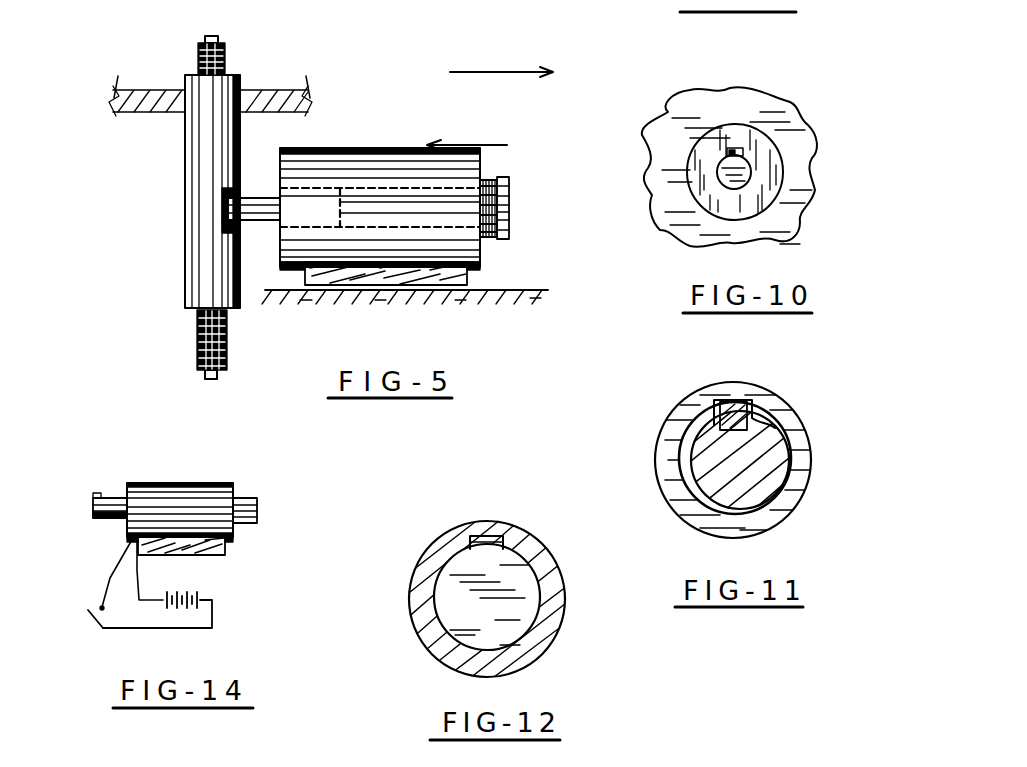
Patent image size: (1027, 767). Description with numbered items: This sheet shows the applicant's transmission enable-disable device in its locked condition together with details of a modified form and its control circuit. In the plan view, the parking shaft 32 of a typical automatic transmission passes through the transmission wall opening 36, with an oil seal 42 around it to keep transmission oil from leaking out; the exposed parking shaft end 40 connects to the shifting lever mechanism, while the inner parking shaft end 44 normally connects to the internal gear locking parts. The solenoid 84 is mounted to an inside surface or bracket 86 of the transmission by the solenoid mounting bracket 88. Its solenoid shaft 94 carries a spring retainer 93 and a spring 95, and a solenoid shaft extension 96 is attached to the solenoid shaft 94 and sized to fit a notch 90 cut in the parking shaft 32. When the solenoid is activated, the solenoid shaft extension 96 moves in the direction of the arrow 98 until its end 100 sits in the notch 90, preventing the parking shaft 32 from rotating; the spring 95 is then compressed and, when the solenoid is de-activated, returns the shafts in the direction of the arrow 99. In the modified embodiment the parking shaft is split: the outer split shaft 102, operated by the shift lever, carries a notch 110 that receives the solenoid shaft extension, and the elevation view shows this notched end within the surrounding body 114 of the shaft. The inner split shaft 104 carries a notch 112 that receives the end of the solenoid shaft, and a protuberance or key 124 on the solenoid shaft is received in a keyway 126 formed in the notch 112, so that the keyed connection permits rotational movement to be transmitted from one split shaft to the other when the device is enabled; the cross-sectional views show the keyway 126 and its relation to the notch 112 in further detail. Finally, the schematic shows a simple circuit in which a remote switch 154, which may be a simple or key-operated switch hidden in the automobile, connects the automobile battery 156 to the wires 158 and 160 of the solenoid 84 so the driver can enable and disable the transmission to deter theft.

In FIG. 5, the parking shaft 32 is at (185, 142).
In FIG. 5, the transmission wall opening 36 is at (245, 100).
In FIG. 5, the parking shaft end 40 is at (200, 60).
In FIG. 5, the oil seal 42 is at (241, 90).
In FIG. 5, the parking shaft end 44 is at (197, 345).
In FIG. 5, the solenoid 84 is at (397, 133).
In FIG. 14, the solenoid 84 is at (195, 492).
In FIG. 5, the inside surface or bracket 86 is at (500, 289).
In FIG. 5, the solenoid mounting bracket 88 is at (425, 272).
In FIG. 14, the solenoid mounting bracket 88 is at (222, 544).
In FIG. 5, the notch 90 is at (228, 230).
In FIG. 5, the spring retainer 93 is at (509, 205).
In FIG. 5, the solenoid shaft 94 is at (375, 218).
In FIG. 14, the solenoid shaft 94 is at (247, 499).
In FIG. 5, the spring 95 is at (491, 178).
In FIG. 5, the solenoid shaft extension 96 is at (258, 196).
In FIG. 14, the solenoid shaft extension 96 is at (115, 498).
In FIG. 5, the arrow 98 is at (460, 144).
In FIG. 5, the arrow 99 is at (510, 71).
In FIG. 5, the end of solenoid shaft extension 100 is at (228, 202).
In FIG. 10, the split shaft 102 is at (758, 140).
In FIG. 11, the split shaft 104 is at (785, 515).
In FIG. 12, the split shaft 104 is at (538, 650).
In FIG. 10, the notch 110 is at (745, 180).
In FIG. 11, the notch 112 is at (788, 463).
In FIG. 12, the notch 112 is at (446, 612).
In FIG. 10, the body 114 is at (706, 105).
In FIG. 11, the protuberance or key 124 is at (752, 404).
In FIG. 11, the keyway 126 is at (758, 415).
In FIG. 12, the keyway 126 is at (497, 537).
In FIG. 14, the remote switch 154 is at (92, 615).
In FIG. 14, the automobile battery 156 is at (200, 600).
In FIG. 14, the wire 158 is at (110, 578).
In FIG. 14, the wire 160 is at (138, 583).